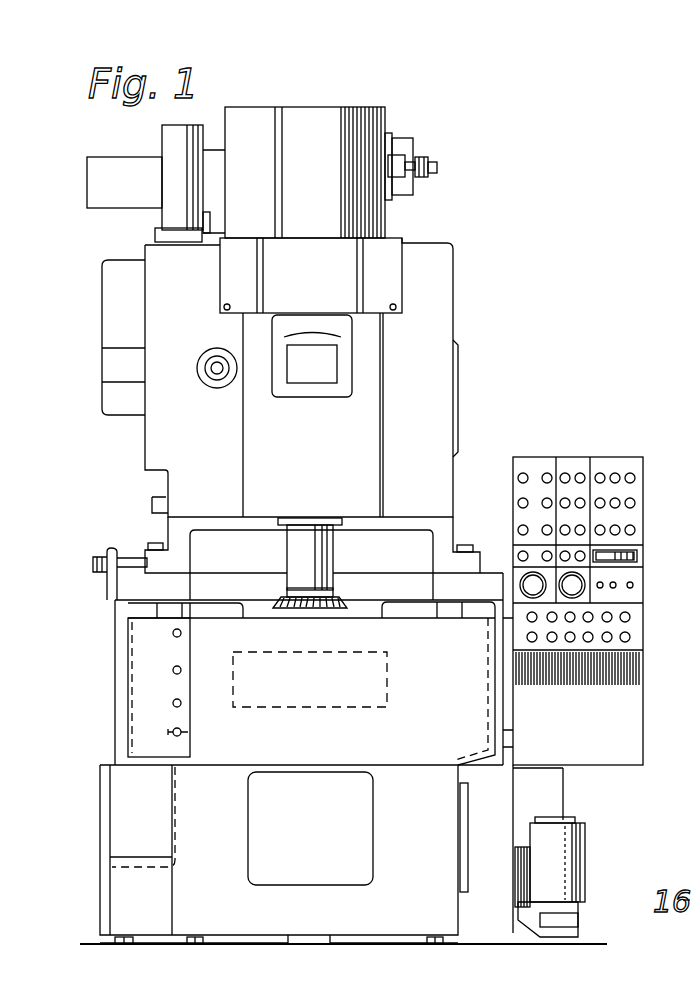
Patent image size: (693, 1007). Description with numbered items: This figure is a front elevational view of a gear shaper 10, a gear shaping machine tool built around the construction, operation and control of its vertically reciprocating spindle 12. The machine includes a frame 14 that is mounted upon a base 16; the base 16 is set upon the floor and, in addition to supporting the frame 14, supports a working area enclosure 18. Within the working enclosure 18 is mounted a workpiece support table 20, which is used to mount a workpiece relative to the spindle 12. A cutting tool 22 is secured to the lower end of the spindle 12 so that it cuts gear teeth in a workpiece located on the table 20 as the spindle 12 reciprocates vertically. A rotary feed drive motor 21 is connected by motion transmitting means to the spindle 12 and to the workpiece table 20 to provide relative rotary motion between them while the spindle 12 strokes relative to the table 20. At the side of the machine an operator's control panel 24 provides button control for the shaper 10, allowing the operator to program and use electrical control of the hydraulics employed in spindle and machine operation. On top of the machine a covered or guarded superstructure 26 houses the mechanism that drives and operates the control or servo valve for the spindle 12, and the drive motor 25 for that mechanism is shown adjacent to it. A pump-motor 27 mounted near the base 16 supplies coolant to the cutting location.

The gear shaper 10 is at (468, 318).
The spindle 12 is at (333, 562).
The frame 14 is at (453, 470).
The base 16 is at (517, 783).
The working area enclosure 18 is at (495, 710).
The workpiece support table 20 is at (332, 645).
The rotary feed drive motor 21 is at (173, 138).
The cutting tool 22 is at (345, 600).
The operator's control panel 24 is at (618, 452).
The drive motor 25 is at (130, 180).
The superstructure 26 is at (377, 121).
The pump-motor 27 is at (573, 858).